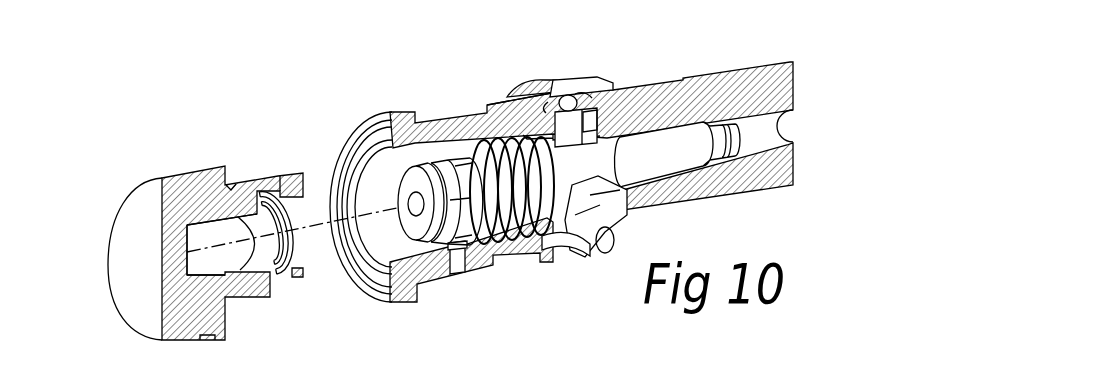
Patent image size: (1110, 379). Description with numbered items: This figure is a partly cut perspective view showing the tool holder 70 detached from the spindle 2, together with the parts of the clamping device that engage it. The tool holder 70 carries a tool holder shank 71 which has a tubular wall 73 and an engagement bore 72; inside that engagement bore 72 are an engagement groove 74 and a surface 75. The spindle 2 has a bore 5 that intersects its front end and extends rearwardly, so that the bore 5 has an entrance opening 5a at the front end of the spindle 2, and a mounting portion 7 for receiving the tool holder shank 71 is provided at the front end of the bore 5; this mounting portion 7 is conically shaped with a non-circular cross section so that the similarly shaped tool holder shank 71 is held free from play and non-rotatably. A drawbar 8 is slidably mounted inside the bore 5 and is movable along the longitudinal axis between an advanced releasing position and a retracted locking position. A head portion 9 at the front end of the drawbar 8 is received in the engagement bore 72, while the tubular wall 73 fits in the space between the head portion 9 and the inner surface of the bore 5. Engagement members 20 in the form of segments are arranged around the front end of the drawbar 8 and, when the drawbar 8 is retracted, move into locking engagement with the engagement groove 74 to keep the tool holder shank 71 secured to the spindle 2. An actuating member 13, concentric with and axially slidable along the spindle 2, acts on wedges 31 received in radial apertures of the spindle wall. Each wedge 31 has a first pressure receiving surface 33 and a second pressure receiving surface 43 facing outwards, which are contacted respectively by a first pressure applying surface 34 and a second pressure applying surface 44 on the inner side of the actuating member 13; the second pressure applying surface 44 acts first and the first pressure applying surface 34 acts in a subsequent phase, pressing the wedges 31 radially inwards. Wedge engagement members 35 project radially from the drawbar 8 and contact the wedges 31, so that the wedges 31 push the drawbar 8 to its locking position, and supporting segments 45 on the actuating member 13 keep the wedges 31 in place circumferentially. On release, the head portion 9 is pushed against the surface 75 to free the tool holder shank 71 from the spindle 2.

The tool holder 70 is at (159, 156).
The tool holder shank 71 is at (238, 182).
The engagement bore 72 is at (247, 248).
The tubular wall 73 is at (280, 182).
The engagement groove 74 is at (287, 272).
The surface 75 is at (263, 284).
The spindle 2 is at (450, 118).
The bore 5 is at (423, 153).
The entrance opening 5a is at (373, 238).
The mounting portion 7 is at (403, 243).
The head portion 9 is at (447, 227).
The actuating member 13 is at (503, 100).
The engagement members 20 is at (473, 220).
The wedge 31 is at (590, 108).
The first pressure receiving surface 33 is at (566, 98).
The first pressure applying surface 34 is at (523, 117).
The wedge engagement member 35 is at (587, 133).
The second pressure receiving surface 43 is at (550, 100).
The second pressure applying surface 44 is at (564, 98).
The supporting segment 45 is at (600, 242).
The drawbar 8 is at (553, 207).